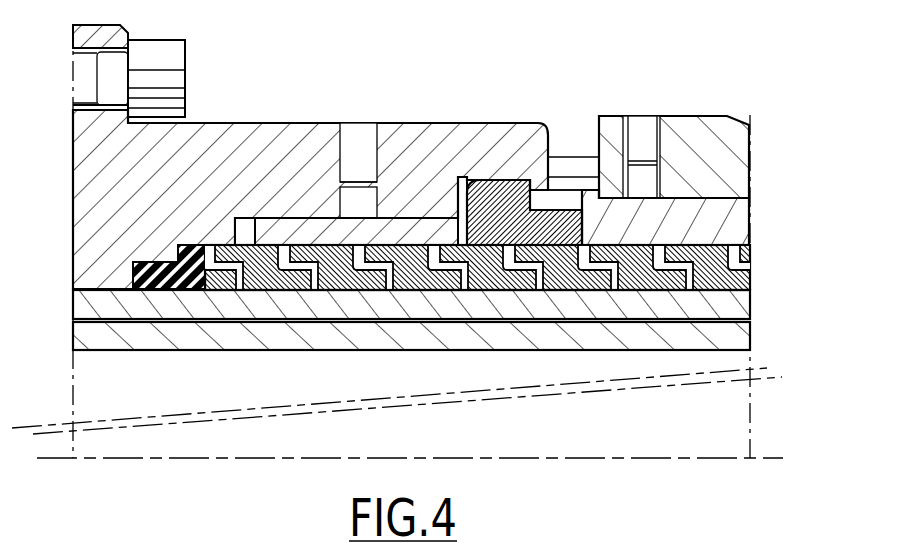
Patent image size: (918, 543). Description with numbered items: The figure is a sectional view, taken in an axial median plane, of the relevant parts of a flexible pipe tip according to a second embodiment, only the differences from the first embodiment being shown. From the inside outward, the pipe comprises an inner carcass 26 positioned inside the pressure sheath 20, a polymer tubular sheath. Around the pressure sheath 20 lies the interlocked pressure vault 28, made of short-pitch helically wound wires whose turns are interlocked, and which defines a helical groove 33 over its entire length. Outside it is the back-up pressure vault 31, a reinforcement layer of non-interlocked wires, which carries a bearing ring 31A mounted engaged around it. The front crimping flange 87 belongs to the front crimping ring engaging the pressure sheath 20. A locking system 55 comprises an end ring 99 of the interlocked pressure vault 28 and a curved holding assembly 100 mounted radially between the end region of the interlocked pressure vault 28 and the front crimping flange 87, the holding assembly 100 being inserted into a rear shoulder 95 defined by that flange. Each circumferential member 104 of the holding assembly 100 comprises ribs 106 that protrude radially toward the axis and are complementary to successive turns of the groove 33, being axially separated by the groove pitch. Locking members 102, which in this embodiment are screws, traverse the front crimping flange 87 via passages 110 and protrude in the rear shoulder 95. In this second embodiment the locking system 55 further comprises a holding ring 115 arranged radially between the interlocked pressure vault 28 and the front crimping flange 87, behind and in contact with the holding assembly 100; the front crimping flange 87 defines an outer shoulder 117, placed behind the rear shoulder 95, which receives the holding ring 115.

The front crimping flange 87 is at (218, 165).
The circumferential member 104 is at (292, 210).
The passage 110 is at (352, 126).
The locking member 102 is at (365, 203).
The curved holding assembly 100 is at (418, 196).
The rear shoulder 95 is at (440, 217).
The outer shoulder 117 is at (508, 181).
The holding ring 115 is at (562, 208).
The bearing ring 31A is at (713, 160).
The back-up pressure vault 31 is at (715, 228).
The interlocked pressure vault 28 is at (720, 283).
The pressure sheath 20 is at (717, 308).
The inner carcass 26 is at (713, 338).
The end ring 99 is at (178, 277).
The rib 106 is at (277, 250).
The helical groove 33 is at (363, 272).
The locking system 55 is at (428, 285).